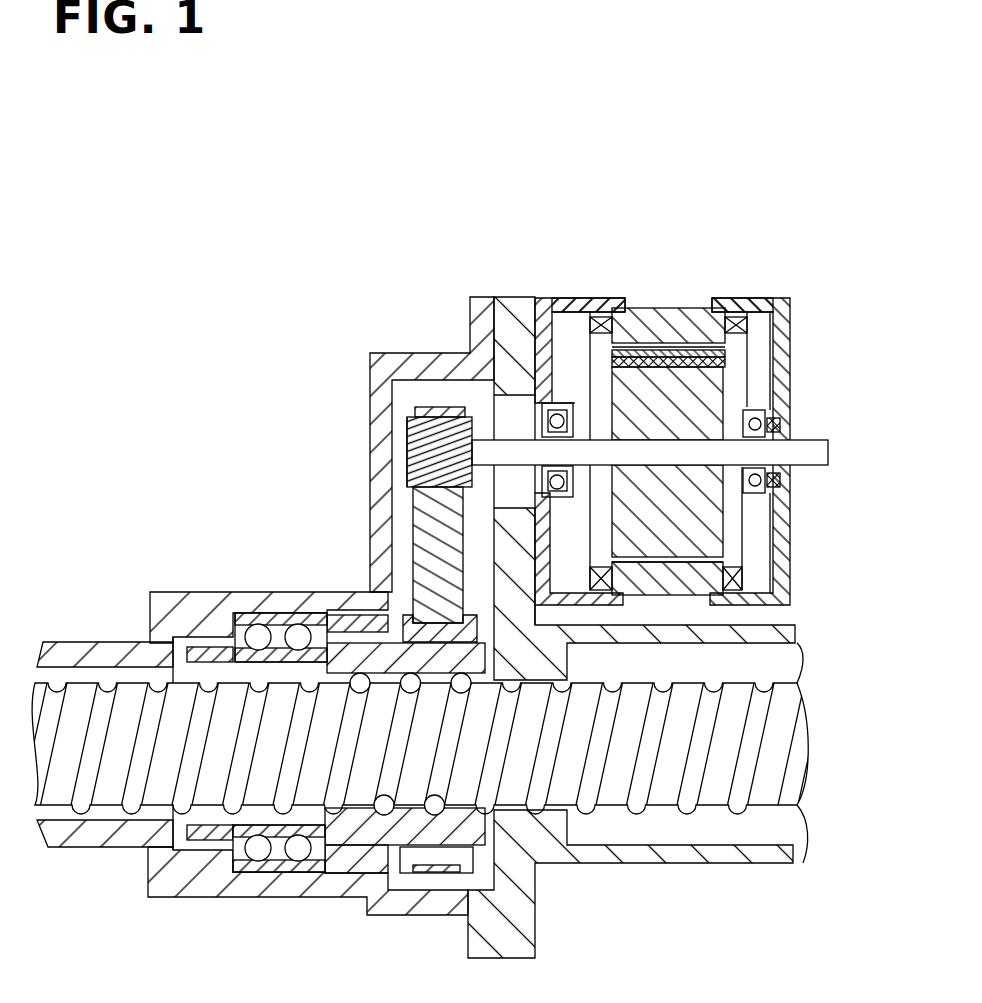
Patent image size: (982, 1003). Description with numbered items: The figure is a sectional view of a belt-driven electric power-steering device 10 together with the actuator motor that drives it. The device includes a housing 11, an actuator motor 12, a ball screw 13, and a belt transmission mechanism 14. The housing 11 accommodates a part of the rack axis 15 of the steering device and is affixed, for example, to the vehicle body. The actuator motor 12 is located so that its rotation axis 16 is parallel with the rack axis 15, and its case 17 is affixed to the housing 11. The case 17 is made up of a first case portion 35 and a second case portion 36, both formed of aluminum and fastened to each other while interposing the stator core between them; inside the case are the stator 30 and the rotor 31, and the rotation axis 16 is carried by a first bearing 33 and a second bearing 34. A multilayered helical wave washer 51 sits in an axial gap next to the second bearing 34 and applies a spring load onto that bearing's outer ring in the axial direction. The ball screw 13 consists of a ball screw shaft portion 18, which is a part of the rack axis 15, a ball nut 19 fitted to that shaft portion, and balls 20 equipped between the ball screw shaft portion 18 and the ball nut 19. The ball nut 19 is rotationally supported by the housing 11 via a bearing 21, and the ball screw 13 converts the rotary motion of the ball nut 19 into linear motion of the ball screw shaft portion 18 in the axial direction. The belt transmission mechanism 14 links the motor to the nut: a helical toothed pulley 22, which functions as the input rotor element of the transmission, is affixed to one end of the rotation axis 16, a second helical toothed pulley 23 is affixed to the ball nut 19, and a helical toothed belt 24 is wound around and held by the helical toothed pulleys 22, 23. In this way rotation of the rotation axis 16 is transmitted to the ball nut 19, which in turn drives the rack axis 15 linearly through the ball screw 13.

The electric power-steering device 10 is at (357, 337).
The housing 11 is at (205, 590).
The actuator motor 12 is at (768, 296).
The ball screw 13 is at (336, 808).
The belt transmission mechanism 14 is at (437, 405).
The rack axis 15 is at (775, 745).
The rotation axis 16 is at (812, 443).
The case 17 is at (725, 245).
The ball screw shaft portion 18 is at (413, 845).
The ball nut 19 is at (340, 832).
The balls 20 is at (382, 815).
The bearing 21 is at (256, 862).
The helical toothed pulley 22 is at (407, 460).
The helical toothed pulley 23 is at (403, 617).
The helical toothed belt 24 is at (418, 527).
The stator 30 is at (708, 570).
The rotor 31 is at (707, 513).
The first bearing 33 is at (553, 418).
The second bearing 34 is at (770, 410).
The first case portion 35 is at (607, 303).
The second case portion 36 is at (738, 303).
The multilayered helical wave washer 51 is at (783, 480).